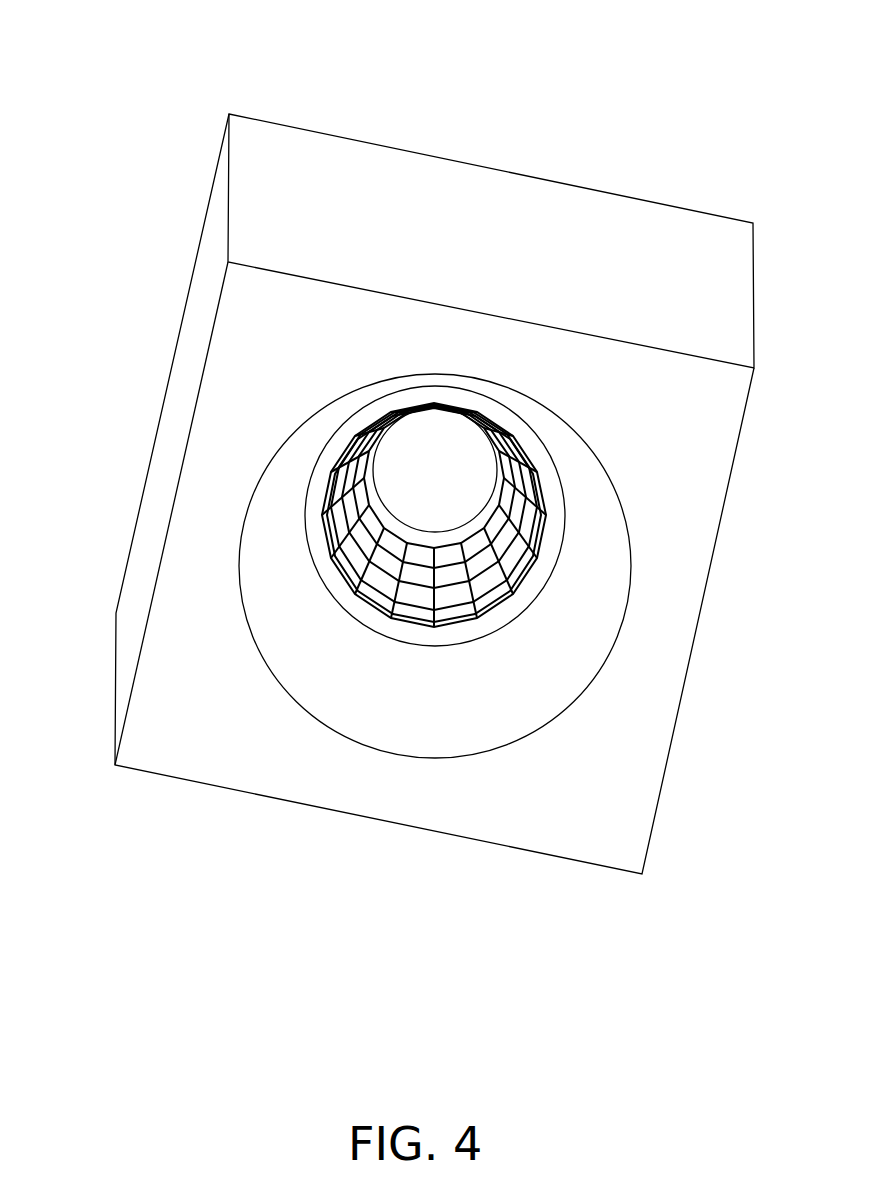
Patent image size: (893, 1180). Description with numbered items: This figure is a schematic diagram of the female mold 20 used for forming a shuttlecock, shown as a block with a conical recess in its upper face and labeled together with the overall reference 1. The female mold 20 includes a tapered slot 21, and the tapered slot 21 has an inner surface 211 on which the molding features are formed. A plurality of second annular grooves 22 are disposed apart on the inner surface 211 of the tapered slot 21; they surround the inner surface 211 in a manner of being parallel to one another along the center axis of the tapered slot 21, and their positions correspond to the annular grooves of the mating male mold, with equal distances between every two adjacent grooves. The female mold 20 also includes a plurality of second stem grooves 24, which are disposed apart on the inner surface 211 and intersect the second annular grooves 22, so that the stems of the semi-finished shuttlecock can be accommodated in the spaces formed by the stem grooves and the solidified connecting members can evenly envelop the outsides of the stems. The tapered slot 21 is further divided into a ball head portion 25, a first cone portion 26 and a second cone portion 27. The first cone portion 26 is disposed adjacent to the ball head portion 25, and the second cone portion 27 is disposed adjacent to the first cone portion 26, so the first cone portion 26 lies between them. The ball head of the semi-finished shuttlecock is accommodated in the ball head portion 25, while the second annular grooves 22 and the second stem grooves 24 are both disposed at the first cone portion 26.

The electronic device 1 is at (409, 449).
The female mold 20 is at (203, 58).
The tapered slot 21 is at (455, 432).
The inner surface 211 is at (534, 452).
The second annular grooves 22 is at (372, 562).
The second stem grooves 24 is at (472, 598).
The ball head portion 25 is at (417, 437).
The first cone portion 26 is at (352, 430).
The second cone portion 27 is at (287, 457).